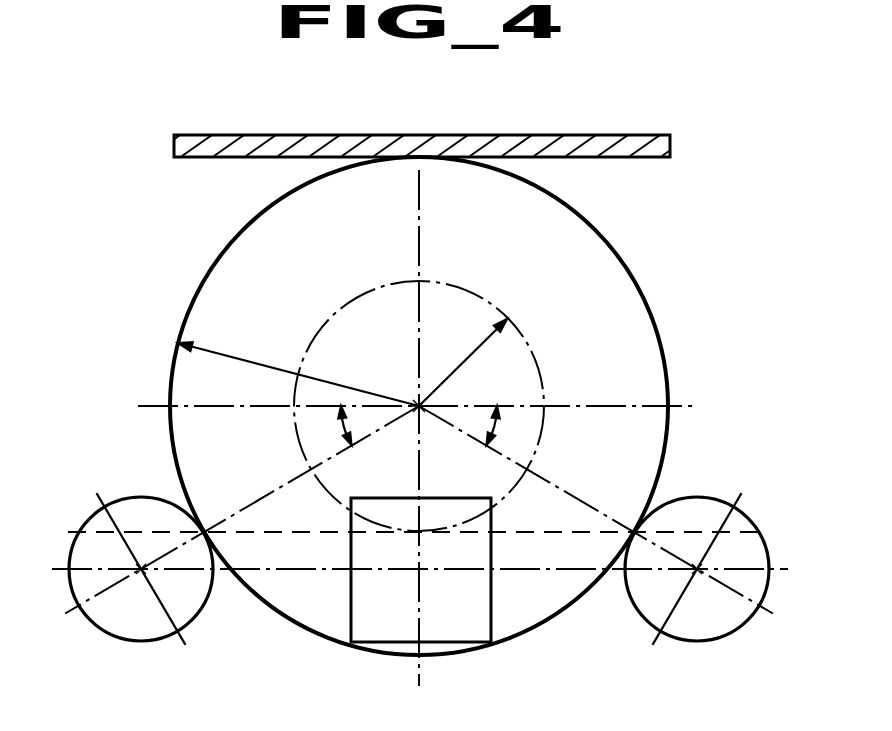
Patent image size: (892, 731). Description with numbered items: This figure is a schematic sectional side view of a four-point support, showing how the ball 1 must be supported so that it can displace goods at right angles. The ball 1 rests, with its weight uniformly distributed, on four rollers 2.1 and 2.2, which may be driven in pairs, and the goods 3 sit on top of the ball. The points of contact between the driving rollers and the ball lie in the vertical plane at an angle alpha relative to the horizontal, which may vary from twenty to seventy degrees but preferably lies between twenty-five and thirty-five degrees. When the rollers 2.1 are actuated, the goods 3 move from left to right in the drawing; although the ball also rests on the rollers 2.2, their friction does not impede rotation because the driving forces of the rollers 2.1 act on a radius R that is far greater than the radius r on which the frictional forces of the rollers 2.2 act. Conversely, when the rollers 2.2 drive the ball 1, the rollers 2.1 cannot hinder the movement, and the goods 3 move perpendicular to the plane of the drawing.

The ball 1 is at (600, 259).
The rollers 2.1 is at (128, 626).
The rollers 2.2 is at (401, 633).
The goods 3 is at (558, 143).
The radius R is at (206, 339).
The radius r is at (481, 343).